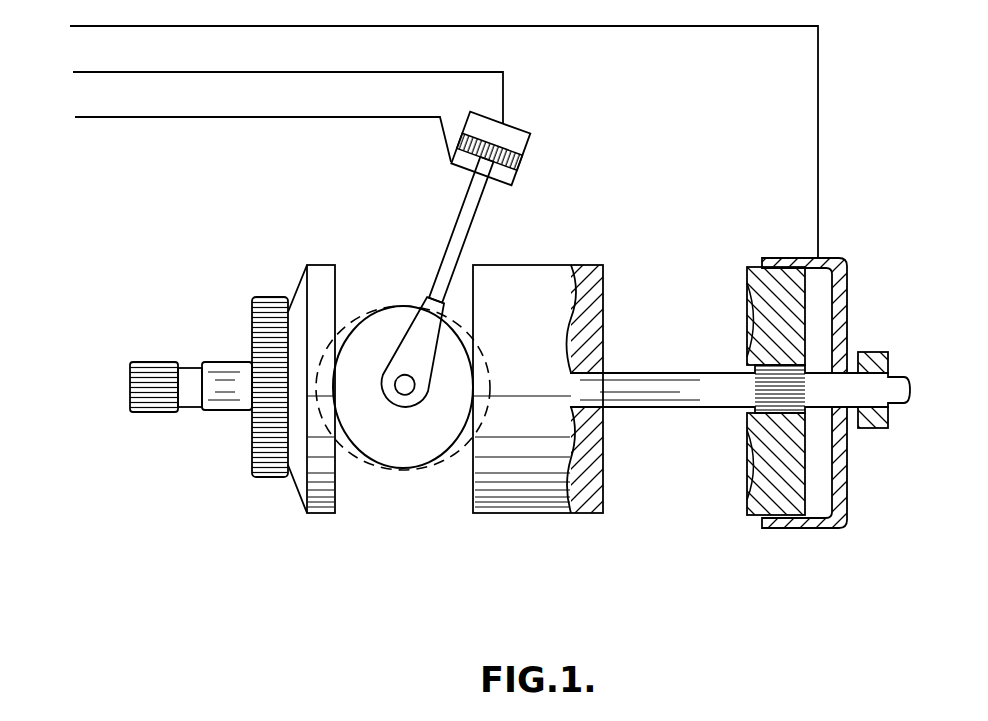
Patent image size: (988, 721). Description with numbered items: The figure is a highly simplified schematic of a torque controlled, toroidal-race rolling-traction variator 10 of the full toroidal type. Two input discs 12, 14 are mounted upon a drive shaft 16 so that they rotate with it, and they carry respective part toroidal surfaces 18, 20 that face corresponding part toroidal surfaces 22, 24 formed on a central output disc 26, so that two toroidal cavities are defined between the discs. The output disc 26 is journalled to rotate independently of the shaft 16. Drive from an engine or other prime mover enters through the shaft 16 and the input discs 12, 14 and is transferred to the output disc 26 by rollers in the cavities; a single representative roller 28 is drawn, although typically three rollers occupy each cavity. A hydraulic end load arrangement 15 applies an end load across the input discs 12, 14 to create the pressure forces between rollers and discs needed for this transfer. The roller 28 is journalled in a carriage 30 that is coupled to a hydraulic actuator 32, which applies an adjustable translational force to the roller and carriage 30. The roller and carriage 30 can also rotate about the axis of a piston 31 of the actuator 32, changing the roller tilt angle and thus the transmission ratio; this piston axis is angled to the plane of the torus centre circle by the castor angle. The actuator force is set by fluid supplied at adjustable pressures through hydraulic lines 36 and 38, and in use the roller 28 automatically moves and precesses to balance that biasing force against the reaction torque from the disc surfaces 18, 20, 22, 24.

The variator 10 is at (366, 564).
The input disc 12 is at (323, 278).
The input disc 14 is at (747, 514).
The hydraulic end load arrangement 15 is at (858, 516).
The drive shaft 16 is at (223, 412).
The part toroidal surface 18 is at (333, 293).
The part toroidal surface 20 is at (757, 318).
The part toroidal surface 22 is at (515, 495).
The part toroidal surface 24 is at (594, 460).
The central output disc 26 is at (530, 303).
The roller 28 is at (386, 478).
The carriage 30 is at (422, 322).
The piston 31 is at (508, 150).
The hydraulic actuator 32 is at (535, 163).
The hydraulic line 36 is at (200, 72).
The hydraulic line 38 is at (200, 118).